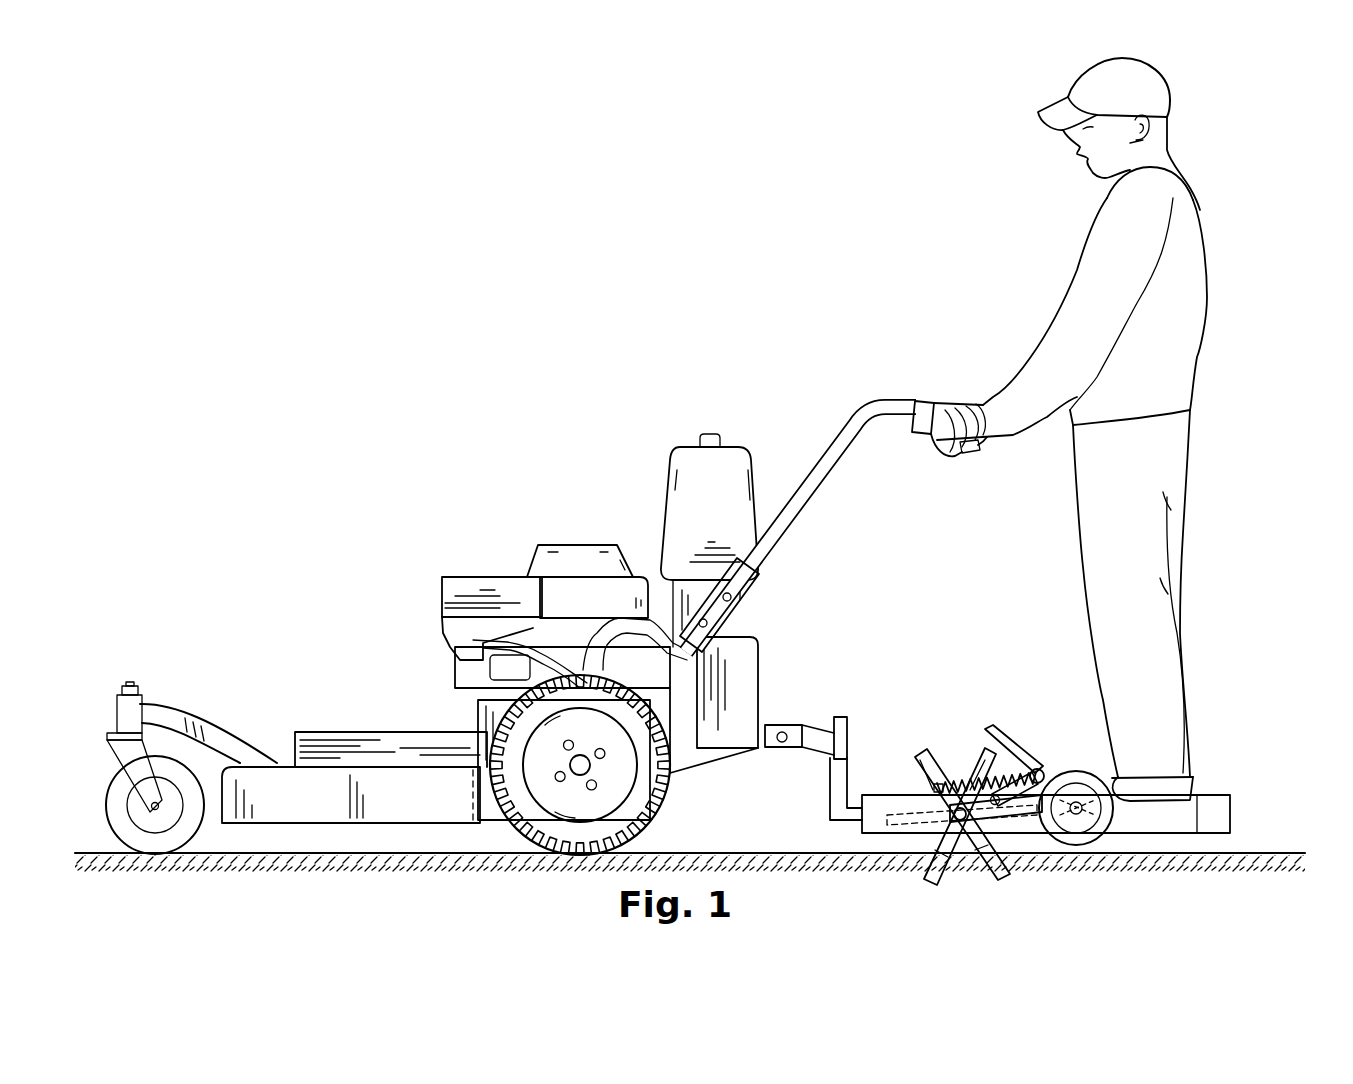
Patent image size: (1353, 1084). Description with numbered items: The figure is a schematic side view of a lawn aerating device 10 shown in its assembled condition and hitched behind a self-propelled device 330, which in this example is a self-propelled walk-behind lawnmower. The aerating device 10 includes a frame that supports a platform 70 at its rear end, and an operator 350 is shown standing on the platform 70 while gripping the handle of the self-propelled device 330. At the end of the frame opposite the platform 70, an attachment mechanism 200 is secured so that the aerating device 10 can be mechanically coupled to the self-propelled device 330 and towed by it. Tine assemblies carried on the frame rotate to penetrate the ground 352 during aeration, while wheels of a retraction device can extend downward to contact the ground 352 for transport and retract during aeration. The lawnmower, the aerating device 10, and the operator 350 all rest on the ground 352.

The lawn aerating device 10 is at (952, 725).
The platform 70 is at (1180, 828).
The attachment mechanism 200 is at (853, 732).
The self-propelled device 330 is at (493, 535).
The operator 350 is at (1153, 338).
The ground 352 is at (1280, 857).